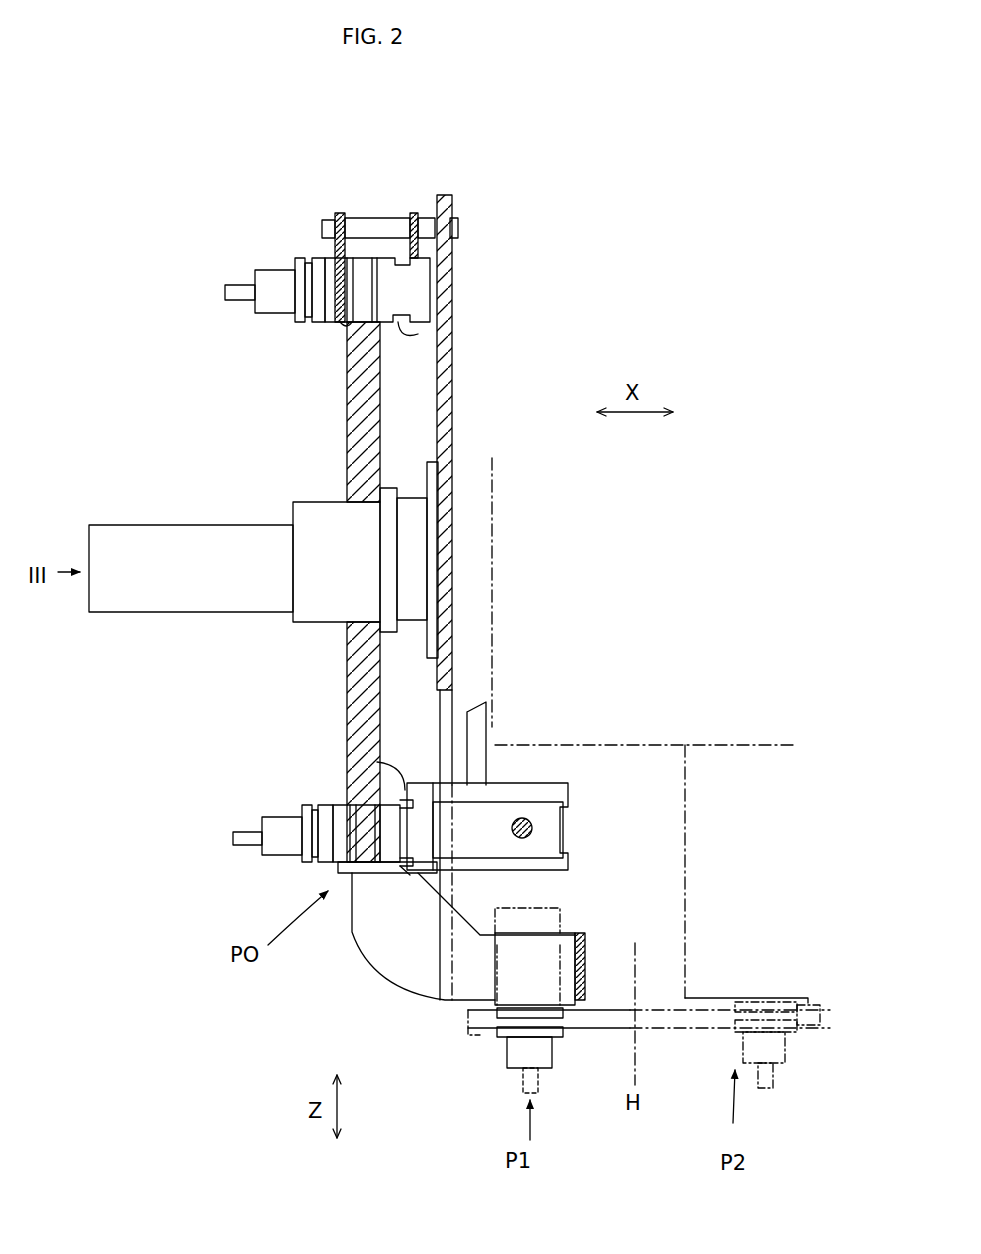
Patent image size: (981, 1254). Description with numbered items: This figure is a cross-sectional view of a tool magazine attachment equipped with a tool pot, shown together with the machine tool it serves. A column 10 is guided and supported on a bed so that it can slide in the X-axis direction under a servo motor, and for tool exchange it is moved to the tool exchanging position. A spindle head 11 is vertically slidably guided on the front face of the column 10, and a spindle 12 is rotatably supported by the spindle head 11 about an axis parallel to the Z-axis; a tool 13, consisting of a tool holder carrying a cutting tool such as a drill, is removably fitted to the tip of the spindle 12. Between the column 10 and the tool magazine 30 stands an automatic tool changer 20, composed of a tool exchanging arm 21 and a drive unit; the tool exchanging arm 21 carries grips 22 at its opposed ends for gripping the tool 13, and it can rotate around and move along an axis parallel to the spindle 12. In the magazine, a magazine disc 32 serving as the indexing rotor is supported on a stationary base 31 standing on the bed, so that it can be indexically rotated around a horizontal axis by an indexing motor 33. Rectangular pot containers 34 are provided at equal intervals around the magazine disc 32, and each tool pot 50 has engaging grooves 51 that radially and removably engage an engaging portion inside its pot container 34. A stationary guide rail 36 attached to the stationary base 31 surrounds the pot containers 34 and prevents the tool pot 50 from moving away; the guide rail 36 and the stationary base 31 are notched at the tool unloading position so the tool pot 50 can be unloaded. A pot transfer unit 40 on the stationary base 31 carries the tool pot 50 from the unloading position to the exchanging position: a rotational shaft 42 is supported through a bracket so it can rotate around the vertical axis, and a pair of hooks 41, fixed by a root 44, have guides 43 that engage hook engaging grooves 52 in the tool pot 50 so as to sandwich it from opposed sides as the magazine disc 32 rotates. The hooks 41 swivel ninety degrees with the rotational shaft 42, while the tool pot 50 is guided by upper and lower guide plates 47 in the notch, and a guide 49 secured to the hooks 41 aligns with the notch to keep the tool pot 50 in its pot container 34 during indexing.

The column 10 is at (494, 533).
The spindle head 11 is at (687, 878).
The spindle 12 is at (728, 998).
The tool 13 is at (307, 262).
The automatic tool changer 20 is at (674, 1042).
The tool exchanging arm 21 is at (602, 1023).
The grips 22 is at (473, 1037).
The tool magazine 30 is at (320, 203).
The stationary base 31 is at (446, 200).
The magazine disc 32 is at (355, 420).
The indexing motor 33 is at (165, 538).
The pot containers 34 is at (350, 313).
The stationary guide rail 36 is at (413, 215).
The pot transfer unit 40 is at (574, 774).
The hooks 41 is at (518, 790).
The rotational shaft 42 is at (535, 825).
The guides 43 is at (402, 793).
The root 44 is at (548, 840).
The guide plates 47 is at (418, 975).
The guide 49 is at (475, 742).
The tool pot 50 is at (418, 292).
The engaging grooves 51 is at (378, 300).
The hook engaging grooves 52 is at (412, 333).